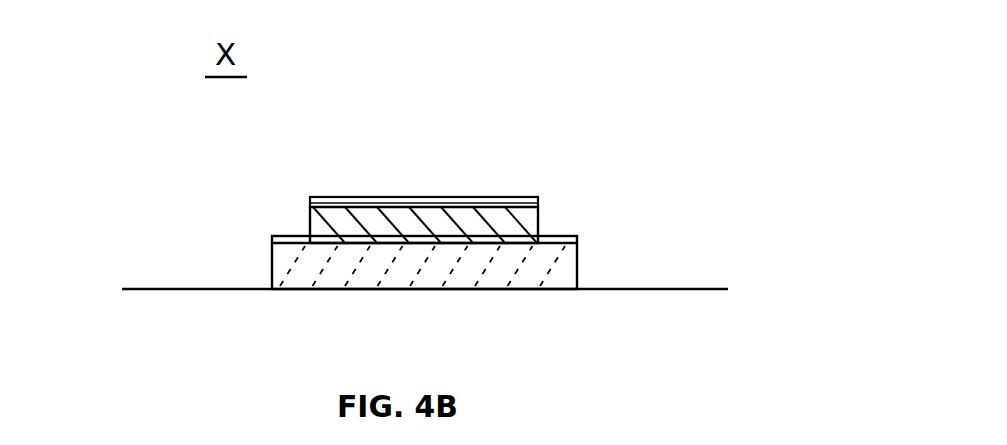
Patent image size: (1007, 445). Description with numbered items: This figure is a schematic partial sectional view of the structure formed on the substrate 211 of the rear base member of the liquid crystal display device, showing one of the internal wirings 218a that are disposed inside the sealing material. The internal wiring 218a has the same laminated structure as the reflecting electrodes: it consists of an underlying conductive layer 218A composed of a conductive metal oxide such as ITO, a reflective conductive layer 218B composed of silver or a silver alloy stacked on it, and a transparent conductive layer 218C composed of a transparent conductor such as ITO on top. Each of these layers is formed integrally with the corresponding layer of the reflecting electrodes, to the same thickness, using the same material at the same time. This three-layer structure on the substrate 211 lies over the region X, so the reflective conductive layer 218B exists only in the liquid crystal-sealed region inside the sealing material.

The substrate 211 is at (167, 289).
The internal wiring 218a is at (506, 148).
The underlying conductive layer 218A is at (577, 268).
The reflective conductive layer 218B is at (538, 228).
The transparent conductive layer 218C is at (538, 202).